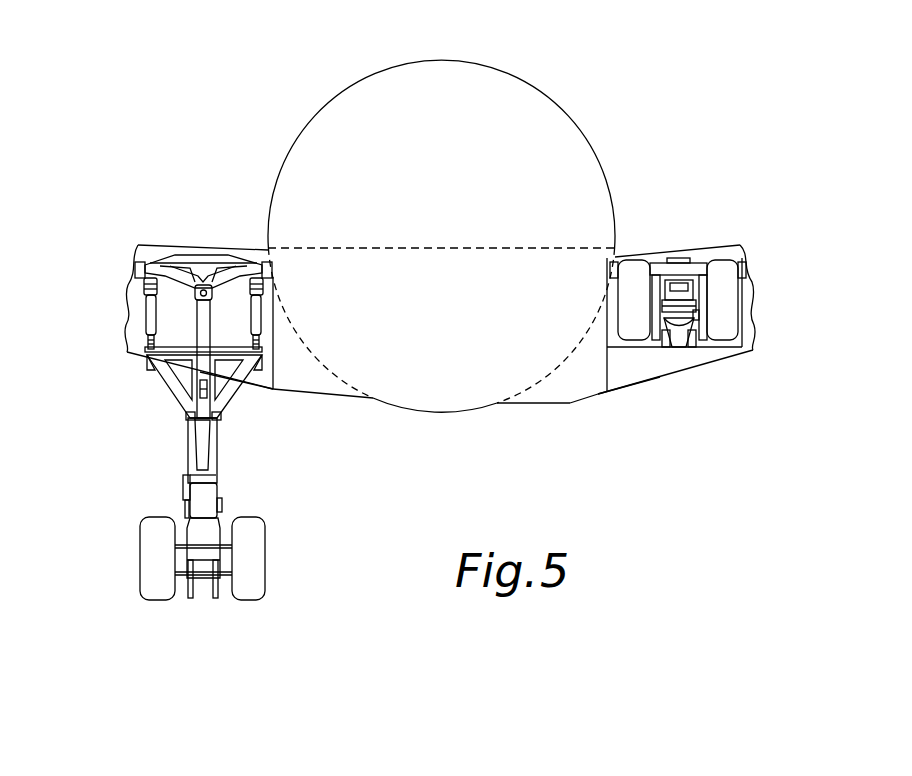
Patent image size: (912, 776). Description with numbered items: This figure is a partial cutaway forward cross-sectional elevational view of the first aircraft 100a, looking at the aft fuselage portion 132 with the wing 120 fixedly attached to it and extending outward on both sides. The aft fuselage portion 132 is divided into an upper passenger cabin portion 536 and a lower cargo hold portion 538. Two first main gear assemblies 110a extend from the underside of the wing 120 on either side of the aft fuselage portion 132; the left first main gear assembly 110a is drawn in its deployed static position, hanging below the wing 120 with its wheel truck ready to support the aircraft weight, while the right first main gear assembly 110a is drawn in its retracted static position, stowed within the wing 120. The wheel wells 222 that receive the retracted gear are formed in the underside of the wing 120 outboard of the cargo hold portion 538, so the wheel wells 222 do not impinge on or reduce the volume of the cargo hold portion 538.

The first aircraft 100a is at (524, 78).
The passenger cabin portion 536 is at (338, 131).
The aft fuselage portion 132 is at (600, 152).
The wing 120 is at (714, 246).
The cargo hold portion 538 is at (388, 357).
The wheel wells 222 is at (258, 385).
The first main gear assemblies 110a is at (128, 427).